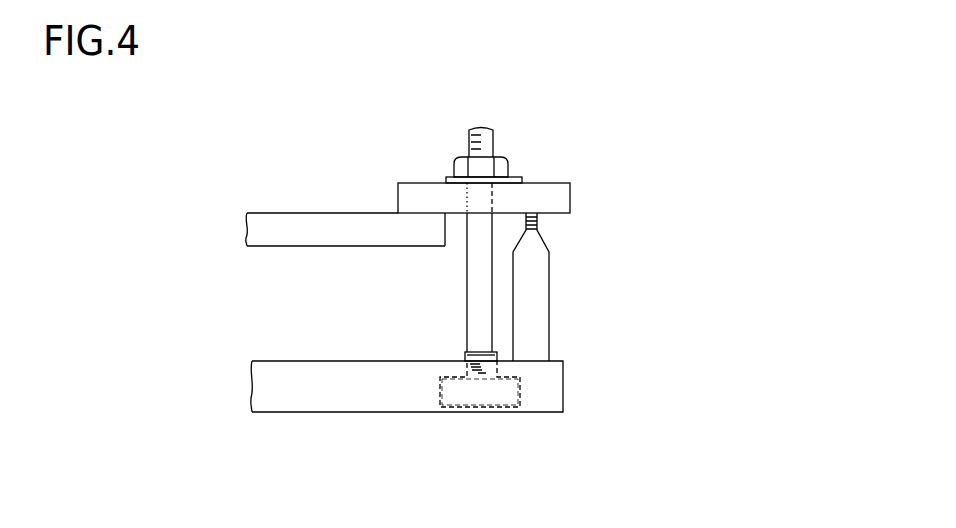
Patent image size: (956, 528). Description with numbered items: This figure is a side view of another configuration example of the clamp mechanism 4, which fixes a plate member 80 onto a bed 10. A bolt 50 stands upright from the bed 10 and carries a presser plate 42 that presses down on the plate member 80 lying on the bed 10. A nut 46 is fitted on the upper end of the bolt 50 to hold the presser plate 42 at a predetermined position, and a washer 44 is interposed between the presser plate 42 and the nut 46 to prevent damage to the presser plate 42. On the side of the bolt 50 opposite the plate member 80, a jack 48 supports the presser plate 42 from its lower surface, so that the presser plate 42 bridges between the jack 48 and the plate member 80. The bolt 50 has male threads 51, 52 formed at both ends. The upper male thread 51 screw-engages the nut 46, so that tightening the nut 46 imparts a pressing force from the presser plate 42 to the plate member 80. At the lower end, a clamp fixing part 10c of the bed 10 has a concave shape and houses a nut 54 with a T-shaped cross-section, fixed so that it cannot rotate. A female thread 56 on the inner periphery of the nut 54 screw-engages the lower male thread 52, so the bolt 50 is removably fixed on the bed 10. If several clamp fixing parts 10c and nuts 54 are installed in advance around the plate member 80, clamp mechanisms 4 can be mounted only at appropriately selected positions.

The clamp mechanism 4 is at (446, 271).
The bed 10 is at (311, 413).
The clamp fixing part 10c is at (437, 398).
The presser plate 42 is at (398, 183).
The washer 44 is at (447, 178).
The nut 46 is at (507, 168).
The jack 48 is at (549, 283).
The bolt 50 is at (467, 302).
The male thread 51 is at (495, 134).
The male thread 52 is at (466, 368).
The nut 54 is at (500, 393).
The female thread 56 is at (492, 353).
The plate member 80 is at (292, 213).